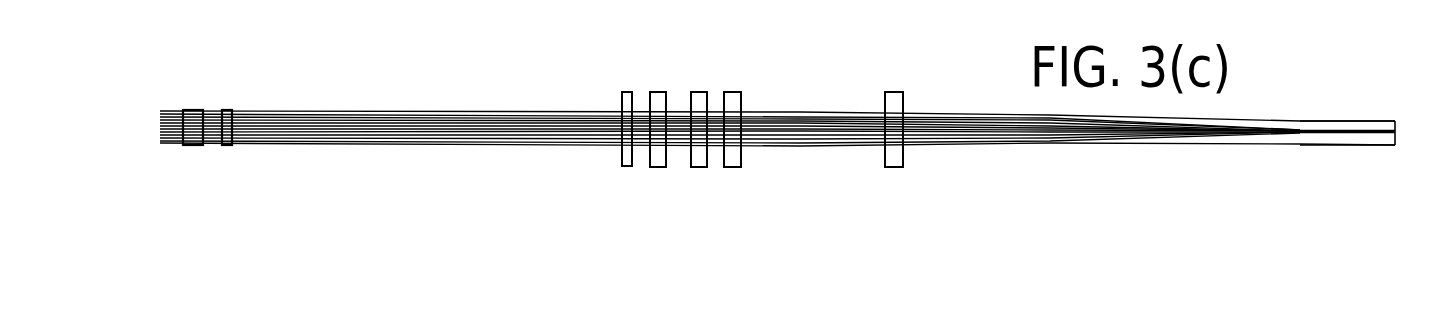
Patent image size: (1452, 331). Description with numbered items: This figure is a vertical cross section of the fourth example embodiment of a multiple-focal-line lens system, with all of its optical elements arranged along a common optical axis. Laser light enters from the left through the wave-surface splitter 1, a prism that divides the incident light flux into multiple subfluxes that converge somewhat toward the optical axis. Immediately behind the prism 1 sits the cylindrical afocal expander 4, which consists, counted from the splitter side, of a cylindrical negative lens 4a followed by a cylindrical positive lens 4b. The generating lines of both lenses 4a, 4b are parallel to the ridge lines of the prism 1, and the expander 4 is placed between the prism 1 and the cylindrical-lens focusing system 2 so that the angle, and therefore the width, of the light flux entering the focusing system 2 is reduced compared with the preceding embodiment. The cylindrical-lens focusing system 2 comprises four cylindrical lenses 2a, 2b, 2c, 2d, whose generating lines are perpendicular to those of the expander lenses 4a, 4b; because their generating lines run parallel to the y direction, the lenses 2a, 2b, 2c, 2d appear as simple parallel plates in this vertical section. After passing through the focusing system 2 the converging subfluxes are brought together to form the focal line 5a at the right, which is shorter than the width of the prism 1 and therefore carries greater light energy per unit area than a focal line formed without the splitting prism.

The wave-surface splitter 1 is at (195, 108).
The cylindrical afocal expander 4 is at (426, 56).
The cylindrical negative lens 4a is at (228, 147).
The cylindrical positive lens 4b is at (622, 170).
The cylindrical-lens focusing system 2 is at (774, 57).
The cylindrical lens 2a is at (658, 167).
The cylindrical lens 2b is at (697, 167).
The cylindrical lens 2c is at (732, 167).
The cylindrical lens 2d is at (893, 167).
The focal line 5a is at (1395, 123).